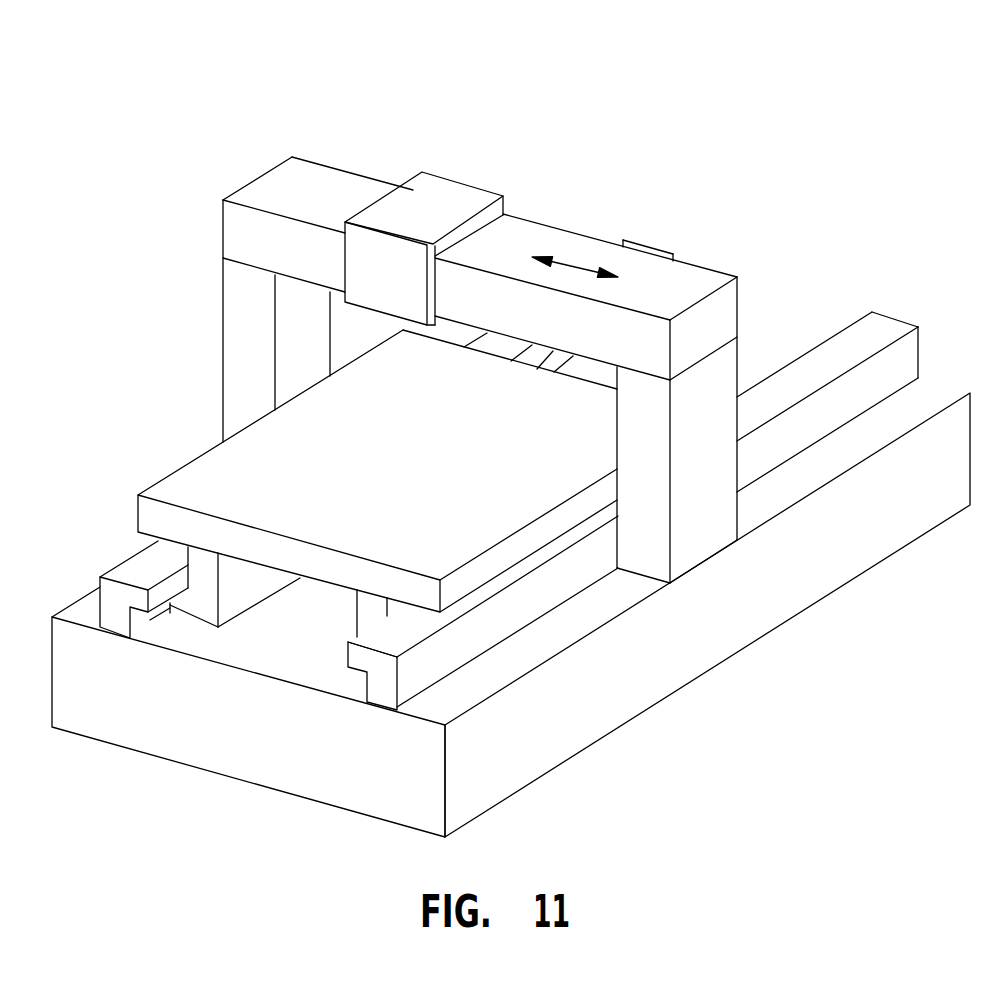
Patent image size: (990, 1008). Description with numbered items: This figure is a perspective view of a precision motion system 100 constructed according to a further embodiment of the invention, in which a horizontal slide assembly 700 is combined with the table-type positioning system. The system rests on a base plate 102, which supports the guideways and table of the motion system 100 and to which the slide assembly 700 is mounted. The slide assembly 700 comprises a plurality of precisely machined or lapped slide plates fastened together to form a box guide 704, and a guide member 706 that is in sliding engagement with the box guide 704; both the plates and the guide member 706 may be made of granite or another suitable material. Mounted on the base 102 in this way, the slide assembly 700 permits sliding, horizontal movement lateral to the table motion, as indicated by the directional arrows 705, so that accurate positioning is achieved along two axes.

The motion system 100 is at (178, 135).
The base plate 102 is at (722, 651).
The horizontal slide assembly 700 is at (483, 156).
The box guide 704 is at (409, 178).
The directional arrows 705 is at (577, 264).
The guide member 706 is at (545, 223).